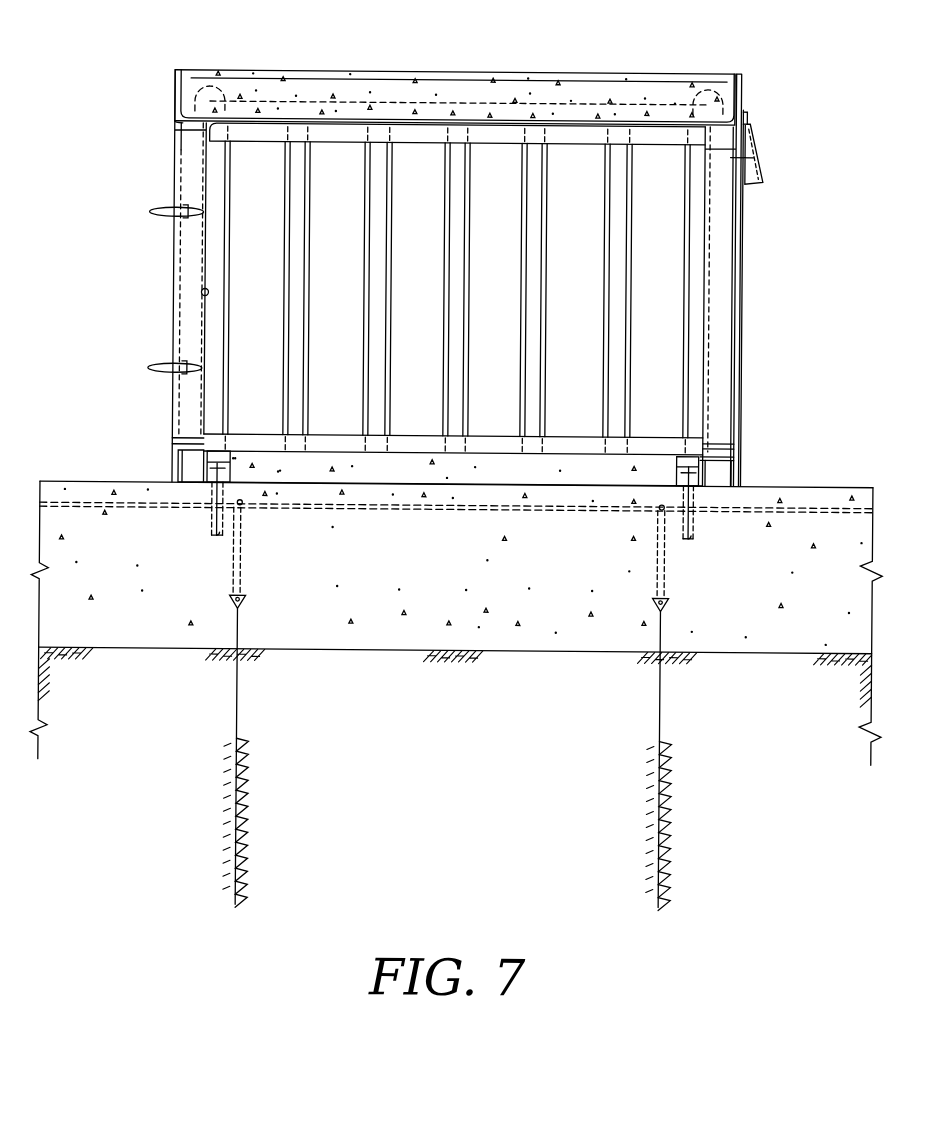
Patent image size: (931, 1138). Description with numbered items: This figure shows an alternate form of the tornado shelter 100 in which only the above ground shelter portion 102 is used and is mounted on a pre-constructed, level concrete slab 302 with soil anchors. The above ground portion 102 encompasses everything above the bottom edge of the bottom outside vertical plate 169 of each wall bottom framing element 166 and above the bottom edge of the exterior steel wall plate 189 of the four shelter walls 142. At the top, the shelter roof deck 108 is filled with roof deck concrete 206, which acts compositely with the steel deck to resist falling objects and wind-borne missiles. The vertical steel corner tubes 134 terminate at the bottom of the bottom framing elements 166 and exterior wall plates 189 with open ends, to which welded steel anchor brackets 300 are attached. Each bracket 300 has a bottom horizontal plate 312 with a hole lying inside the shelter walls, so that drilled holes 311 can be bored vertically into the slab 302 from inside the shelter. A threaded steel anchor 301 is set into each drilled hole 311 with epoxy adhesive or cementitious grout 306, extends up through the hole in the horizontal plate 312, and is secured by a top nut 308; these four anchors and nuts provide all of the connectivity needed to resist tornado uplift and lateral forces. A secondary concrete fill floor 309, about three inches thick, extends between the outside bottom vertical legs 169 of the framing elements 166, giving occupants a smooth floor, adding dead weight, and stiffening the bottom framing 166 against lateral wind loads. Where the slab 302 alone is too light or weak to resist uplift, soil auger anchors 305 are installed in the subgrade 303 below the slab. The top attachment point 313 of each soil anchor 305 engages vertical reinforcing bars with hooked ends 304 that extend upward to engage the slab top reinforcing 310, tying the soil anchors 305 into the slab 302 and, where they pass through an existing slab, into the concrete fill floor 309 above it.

The tornado shelter 100 is at (762, 55).
The above ground shelter portion 102 is at (738, 248).
The shelter roof deck 108 is at (474, 72).
The vertical steel corner tubes 134 is at (182, 465).
The shelter walls 142 is at (739, 336).
The wall bottom framing element 166 is at (718, 448).
The bottom outside vertical plate 169 is at (685, 460).
The exterior steel wall plate 189 is at (739, 386).
The roof deck concrete 206 is at (352, 93).
The steel anchor brackets 300 is at (677, 466).
The threaded steel anchor 301 is at (213, 519).
The concrete slab 302 is at (818, 494).
The subgrade 303 is at (445, 735).
The vertical reinforcing bars with hooked ends 304 is at (242, 561).
The soil auger anchors 305 is at (245, 825).
The epoxy adhesive or cementitious grout 306 is at (219, 541).
The top nuts 308 is at (218, 470).
The concrete fill floor 309 is at (367, 472).
The slab top reinforcing 310 is at (405, 512).
The drilled holes 311 is at (694, 543).
The bottom horizontal plate 312 is at (700, 495).
The top attachment point 313 is at (248, 603).